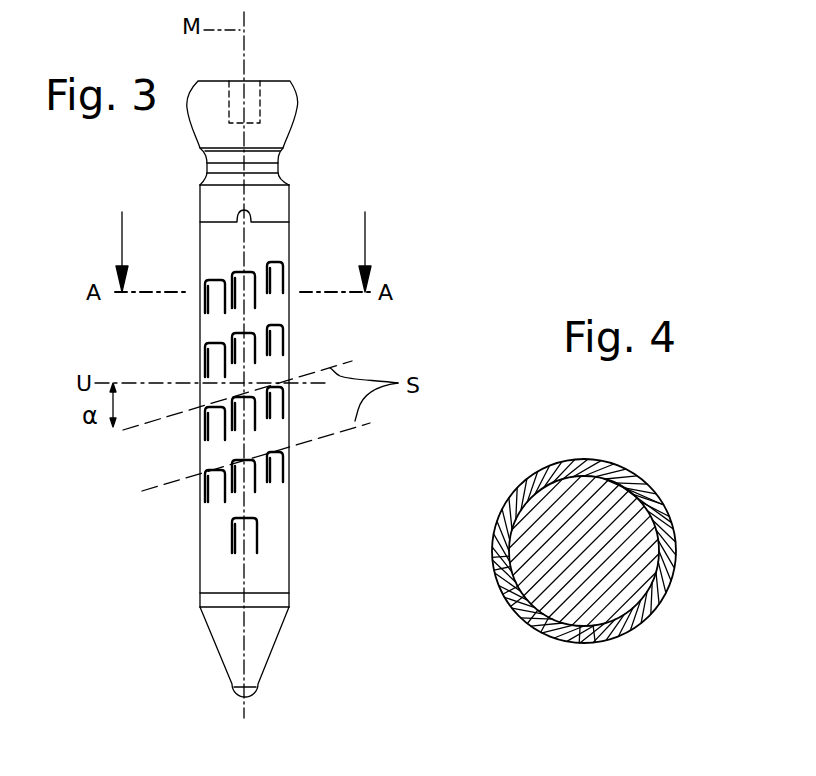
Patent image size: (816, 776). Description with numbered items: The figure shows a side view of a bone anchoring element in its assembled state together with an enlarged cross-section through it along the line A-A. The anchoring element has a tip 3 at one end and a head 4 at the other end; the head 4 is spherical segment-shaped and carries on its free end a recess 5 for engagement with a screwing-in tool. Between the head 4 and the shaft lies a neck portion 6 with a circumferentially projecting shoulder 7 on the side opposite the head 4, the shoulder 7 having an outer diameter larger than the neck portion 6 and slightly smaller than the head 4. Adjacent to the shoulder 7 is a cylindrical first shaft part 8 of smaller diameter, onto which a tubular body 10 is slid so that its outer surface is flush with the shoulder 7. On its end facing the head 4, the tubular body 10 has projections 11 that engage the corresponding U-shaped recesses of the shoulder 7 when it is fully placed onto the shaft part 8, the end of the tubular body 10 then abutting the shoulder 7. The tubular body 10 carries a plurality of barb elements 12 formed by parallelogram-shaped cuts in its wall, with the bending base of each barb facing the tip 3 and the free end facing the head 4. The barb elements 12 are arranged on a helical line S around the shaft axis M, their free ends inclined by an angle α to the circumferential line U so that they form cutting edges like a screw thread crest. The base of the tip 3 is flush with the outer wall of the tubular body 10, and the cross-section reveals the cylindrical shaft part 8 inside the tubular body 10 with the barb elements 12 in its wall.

In FIG. 3, the tip 3 is at (225, 650).
In FIG. 3, the head 4 is at (287, 106).
In FIG. 3, the recess 5 is at (250, 85).
In FIG. 3, the neck portion 6 is at (280, 167).
In FIG. 3, the shoulder 7 is at (213, 203).
In FIG. 4, the cylindrical first shaft part 8 is at (620, 540).
In FIG. 4, the tubular body 10 is at (604, 462).
In FIG. 3, the projections 11 is at (253, 210).
In FIG. 3, the barb elements 12 is at (234, 398).
In FIG. 4, the barb elements 12 is at (578, 640).